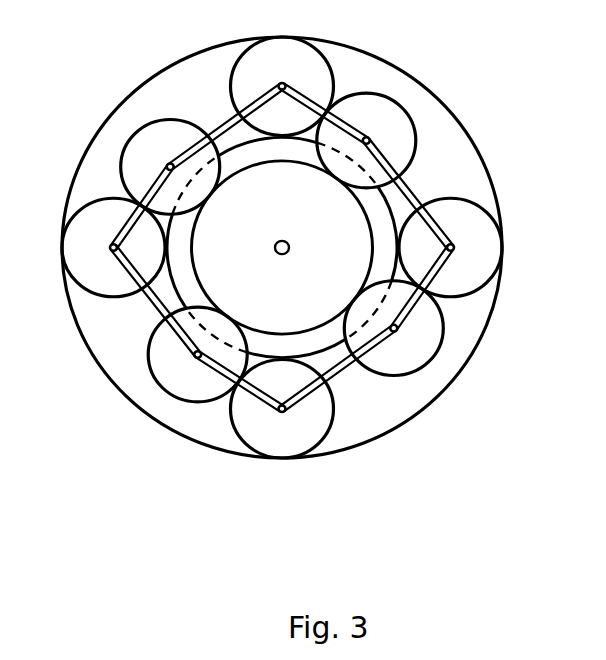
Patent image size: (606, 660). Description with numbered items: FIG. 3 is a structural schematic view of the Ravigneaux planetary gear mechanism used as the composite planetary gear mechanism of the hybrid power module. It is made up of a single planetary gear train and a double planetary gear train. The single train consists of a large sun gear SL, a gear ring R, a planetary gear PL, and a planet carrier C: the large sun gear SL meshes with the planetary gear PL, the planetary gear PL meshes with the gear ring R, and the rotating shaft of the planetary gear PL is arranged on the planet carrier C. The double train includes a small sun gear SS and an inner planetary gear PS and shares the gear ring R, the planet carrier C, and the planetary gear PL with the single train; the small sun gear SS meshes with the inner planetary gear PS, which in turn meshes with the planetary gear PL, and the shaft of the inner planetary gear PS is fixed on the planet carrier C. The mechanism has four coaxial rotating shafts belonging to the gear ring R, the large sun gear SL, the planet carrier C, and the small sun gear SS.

The gear ring R is at (432, 82).
The planet carrier C is at (418, 188).
The planetary gear PL is at (229, 87).
The inner planetary gear PS is at (200, 406).
The large sun gear SL is at (168, 292).
The small sun gear SS is at (198, 292).